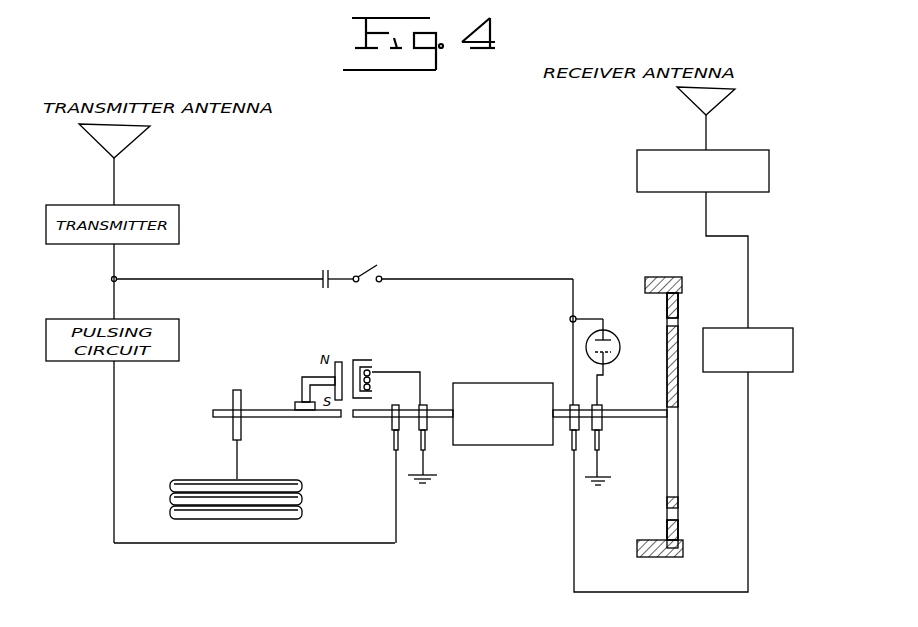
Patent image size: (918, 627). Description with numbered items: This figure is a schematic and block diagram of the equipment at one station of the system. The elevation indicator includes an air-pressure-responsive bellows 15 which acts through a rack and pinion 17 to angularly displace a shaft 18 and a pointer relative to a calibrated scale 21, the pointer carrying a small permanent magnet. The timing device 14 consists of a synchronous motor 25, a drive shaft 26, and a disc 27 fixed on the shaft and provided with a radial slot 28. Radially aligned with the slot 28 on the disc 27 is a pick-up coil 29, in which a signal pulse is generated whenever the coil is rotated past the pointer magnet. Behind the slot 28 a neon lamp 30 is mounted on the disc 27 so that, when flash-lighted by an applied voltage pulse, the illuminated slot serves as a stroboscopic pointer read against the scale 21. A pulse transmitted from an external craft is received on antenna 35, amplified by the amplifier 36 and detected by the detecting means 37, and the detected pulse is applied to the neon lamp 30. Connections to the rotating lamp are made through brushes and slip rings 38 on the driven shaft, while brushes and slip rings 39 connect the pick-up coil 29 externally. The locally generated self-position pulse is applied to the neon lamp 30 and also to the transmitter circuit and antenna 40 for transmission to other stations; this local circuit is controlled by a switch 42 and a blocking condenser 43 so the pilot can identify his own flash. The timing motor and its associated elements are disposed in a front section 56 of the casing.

The timing device 14 is at (201, 466).
The air-pressure-responsive bellows 15 is at (295, 481).
The rack and pinion 17 is at (233, 393).
The shaft 18 is at (256, 402).
The calibrated scale 21 is at (678, 302).
The synchronous motor 25 is at (493, 383).
The drive shaft 26 is at (438, 410).
The disc 27 is at (677, 406).
The radial slot 28 is at (667, 352).
The pick-up coil 29 is at (376, 371).
The neon lamp 30 is at (620, 346).
The antenna 35 is at (723, 99).
The amplifier 36 is at (637, 168).
The detecting means 37 is at (733, 328).
The brushes and slip rings 38 is at (602, 425).
The brushes and slip rings 39 is at (392, 426).
The antenna 40 is at (136, 141).
The switch 42 is at (367, 283).
The blocking condenser 43 is at (323, 289).
The front section 56 is at (683, 282).